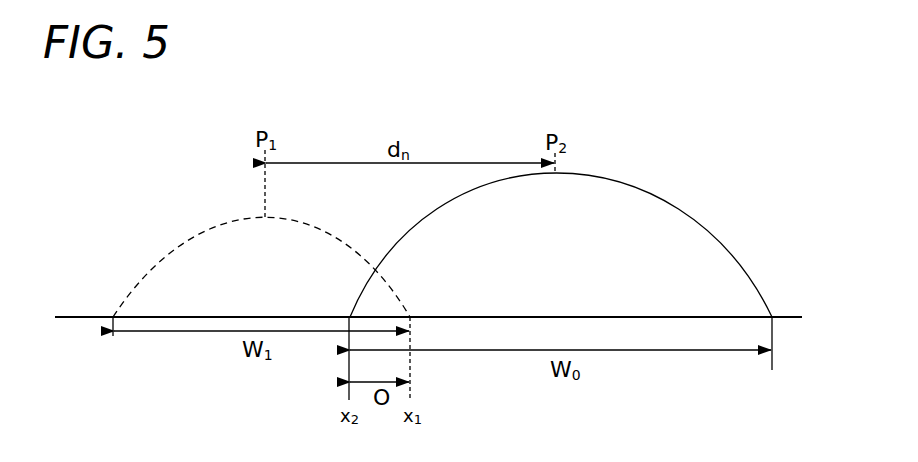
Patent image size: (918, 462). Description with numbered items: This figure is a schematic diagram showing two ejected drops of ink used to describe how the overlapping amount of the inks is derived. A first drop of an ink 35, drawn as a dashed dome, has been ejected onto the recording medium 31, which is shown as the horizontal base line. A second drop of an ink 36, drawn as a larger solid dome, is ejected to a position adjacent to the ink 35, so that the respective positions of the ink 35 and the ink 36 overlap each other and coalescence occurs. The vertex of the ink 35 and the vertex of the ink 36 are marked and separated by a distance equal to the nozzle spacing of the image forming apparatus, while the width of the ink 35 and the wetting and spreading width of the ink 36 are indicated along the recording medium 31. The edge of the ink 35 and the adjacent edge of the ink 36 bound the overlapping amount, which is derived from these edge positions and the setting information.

The recording medium 31 is at (56, 317).
The ink (first drop) 35 is at (214, 221).
The ink (second drop) 36 is at (662, 208).